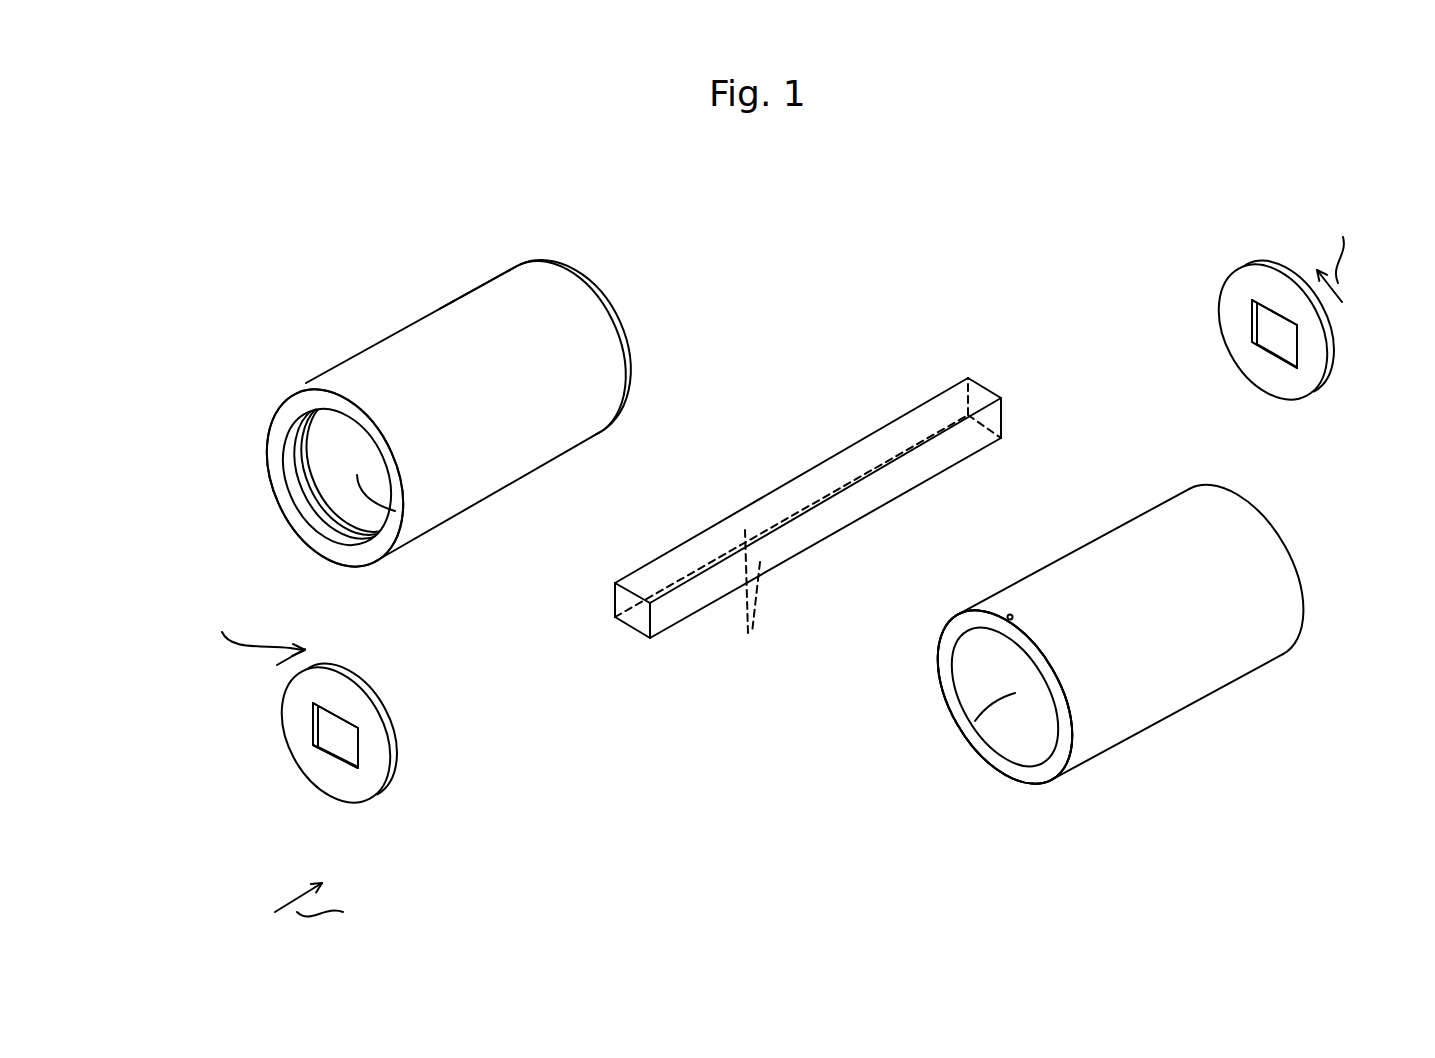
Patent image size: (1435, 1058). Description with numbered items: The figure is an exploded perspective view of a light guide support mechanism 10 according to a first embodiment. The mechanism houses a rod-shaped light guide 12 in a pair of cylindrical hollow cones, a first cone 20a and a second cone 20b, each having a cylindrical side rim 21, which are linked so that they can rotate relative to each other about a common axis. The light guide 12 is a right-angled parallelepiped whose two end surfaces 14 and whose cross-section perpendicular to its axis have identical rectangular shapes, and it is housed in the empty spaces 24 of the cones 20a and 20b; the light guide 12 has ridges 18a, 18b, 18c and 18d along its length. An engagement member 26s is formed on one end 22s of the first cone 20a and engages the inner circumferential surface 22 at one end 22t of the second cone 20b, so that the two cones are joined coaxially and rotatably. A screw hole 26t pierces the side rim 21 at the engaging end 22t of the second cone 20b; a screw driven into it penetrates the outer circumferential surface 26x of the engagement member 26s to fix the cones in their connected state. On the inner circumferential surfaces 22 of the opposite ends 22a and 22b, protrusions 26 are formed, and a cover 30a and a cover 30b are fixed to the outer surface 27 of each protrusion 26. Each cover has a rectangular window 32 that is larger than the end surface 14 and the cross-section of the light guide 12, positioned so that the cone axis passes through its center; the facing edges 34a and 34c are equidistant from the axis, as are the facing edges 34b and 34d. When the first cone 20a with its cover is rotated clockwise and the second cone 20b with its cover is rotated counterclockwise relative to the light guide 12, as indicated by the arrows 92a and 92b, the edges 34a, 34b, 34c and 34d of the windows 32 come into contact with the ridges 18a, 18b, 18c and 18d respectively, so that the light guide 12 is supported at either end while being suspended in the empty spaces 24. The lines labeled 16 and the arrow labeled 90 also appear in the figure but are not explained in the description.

The support mechanism 10 is at (912, 240).
The light guide 12 is at (830, 458).
The end surfaces 14 is at (633, 625).
The grooves 16 is at (712, 550).
The ridge 18a is at (785, 482).
The ridge 18b is at (857, 486).
The ridge 18c is at (850, 527).
The ridge 18d is at (778, 523).
The first cone 20a is at (410, 318).
The second cone 20b is at (1188, 708).
The cylindrical side rim 21 is at (290, 400).
The inner circumferential surface 22 is at (290, 447).
The end of first cone 22a is at (310, 382).
The end of second cone 22b is at (1190, 510).
The engaging end of first cone 22s is at (537, 276).
The engaging end of second cone 22t is at (987, 607).
The empty space 24 is at (395, 511).
The protrusion 26 is at (318, 477).
The engagement member 26s is at (590, 280).
The screw hole 26t is at (1010, 615).
The outer circumferential surface 26x is at (612, 317).
The outer surface of protrusion 27 is at (317, 498).
The cover 30a is at (398, 763).
The cover 30b is at (1333, 358).
The window 32 is at (340, 733).
The edge of window 34a is at (337, 713).
The edge of window 34b is at (362, 738).
The edge of window 34c is at (322, 760).
The edge of window 34d is at (313, 723).
The insertion direction 90 is at (325, 913).
The arrow 92a is at (253, 633).
The arrow 92b is at (1347, 257).